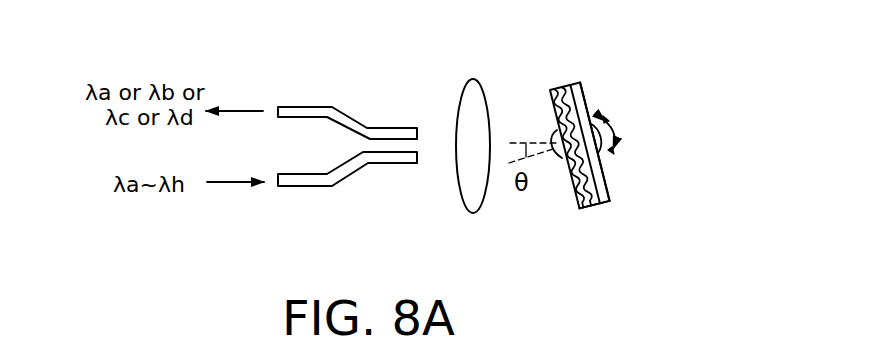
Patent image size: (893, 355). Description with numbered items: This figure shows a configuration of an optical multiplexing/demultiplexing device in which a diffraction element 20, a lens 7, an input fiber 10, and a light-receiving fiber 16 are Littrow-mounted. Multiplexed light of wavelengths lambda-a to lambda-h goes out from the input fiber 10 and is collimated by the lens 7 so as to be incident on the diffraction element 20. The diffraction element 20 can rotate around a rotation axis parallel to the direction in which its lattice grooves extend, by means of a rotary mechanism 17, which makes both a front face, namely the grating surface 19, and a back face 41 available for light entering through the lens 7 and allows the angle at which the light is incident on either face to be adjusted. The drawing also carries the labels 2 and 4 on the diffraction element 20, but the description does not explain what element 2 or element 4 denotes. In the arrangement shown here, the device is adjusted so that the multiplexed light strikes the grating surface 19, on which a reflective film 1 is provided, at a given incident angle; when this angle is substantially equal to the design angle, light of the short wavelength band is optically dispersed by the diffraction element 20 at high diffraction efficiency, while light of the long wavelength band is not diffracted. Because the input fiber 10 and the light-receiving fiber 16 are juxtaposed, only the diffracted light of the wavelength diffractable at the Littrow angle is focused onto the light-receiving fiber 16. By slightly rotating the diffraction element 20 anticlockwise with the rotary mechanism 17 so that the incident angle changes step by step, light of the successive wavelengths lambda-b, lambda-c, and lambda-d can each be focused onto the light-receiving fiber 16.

The reflective film 1 is at (582, 208).
The grating layer 2 is at (562, 92).
The substrate 4 is at (587, 104).
The lens 7 is at (478, 83).
The input fiber 10 is at (325, 182).
The light-receiving fiber 16 is at (337, 108).
The rotary mechanism 17 is at (600, 152).
The grating surface 19 is at (571, 193).
The diffraction element 20 is at (600, 203).
The back face 41 is at (580, 83).